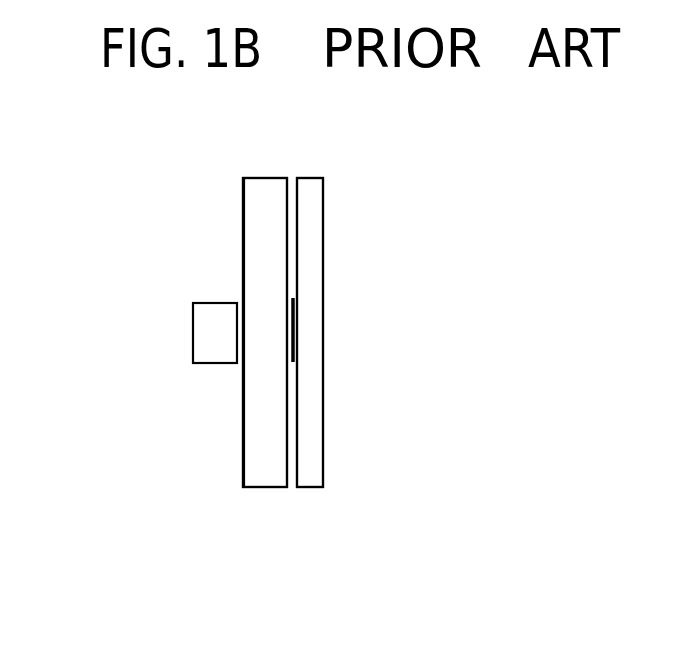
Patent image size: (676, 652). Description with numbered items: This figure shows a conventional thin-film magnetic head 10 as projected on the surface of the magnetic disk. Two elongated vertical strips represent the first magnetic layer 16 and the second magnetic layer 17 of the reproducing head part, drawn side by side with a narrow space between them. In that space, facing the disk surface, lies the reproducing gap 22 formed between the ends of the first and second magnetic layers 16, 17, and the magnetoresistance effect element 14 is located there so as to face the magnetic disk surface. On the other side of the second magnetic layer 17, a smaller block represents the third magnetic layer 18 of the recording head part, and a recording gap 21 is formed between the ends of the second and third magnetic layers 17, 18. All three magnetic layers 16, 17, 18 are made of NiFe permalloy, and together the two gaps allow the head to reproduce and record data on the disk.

The thin-film magnetic head 10 is at (401, 160).
The magnetoresistance effect element 14 is at (295, 310).
The first magnetic layer 16 is at (308, 473).
The second magnetic layer 17 is at (263, 473).
The third magnetic layer 18 is at (198, 337).
The recording gap 21 is at (240, 340).
The reproducing gap 22 is at (295, 342).